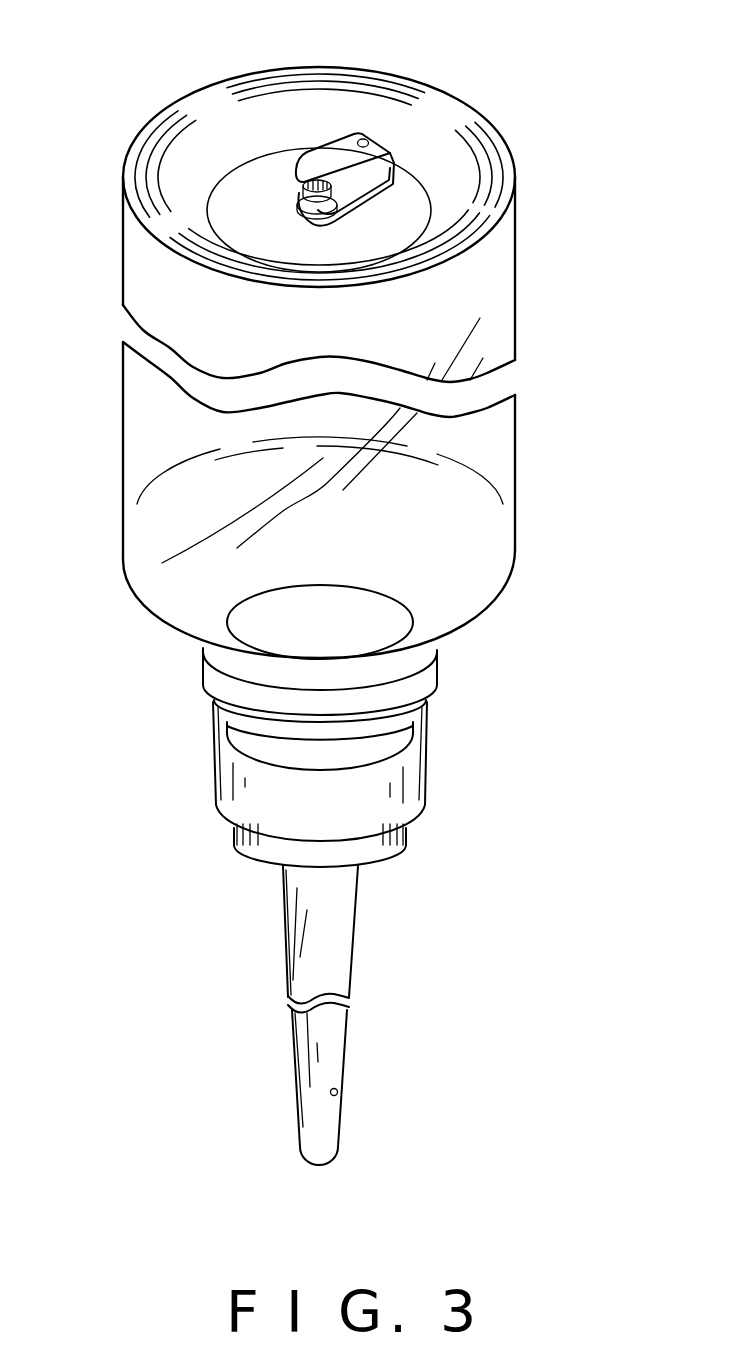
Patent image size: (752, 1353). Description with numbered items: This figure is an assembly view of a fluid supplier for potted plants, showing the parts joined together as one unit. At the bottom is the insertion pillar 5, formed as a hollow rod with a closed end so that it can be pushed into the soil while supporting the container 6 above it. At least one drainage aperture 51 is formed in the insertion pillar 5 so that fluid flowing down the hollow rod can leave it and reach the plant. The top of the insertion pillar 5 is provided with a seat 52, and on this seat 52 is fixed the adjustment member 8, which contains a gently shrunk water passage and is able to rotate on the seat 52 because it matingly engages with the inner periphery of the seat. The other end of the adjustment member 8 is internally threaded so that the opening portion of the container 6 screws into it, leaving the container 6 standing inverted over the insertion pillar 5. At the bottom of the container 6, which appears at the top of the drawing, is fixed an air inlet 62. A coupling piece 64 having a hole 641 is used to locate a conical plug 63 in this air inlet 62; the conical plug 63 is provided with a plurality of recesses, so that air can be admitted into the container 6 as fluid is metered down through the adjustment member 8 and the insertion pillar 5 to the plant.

The insertion pillar 5 is at (308, 935).
The drainage aperture 51 is at (338, 1095).
The seat 52 is at (248, 848).
The container 6 is at (495, 300).
The air inlet 62 is at (300, 208).
The conical plug 63 is at (297, 190).
The coupling piece 64 is at (333, 157).
The hole 641 is at (365, 139).
The adjustment member 8 is at (212, 760).